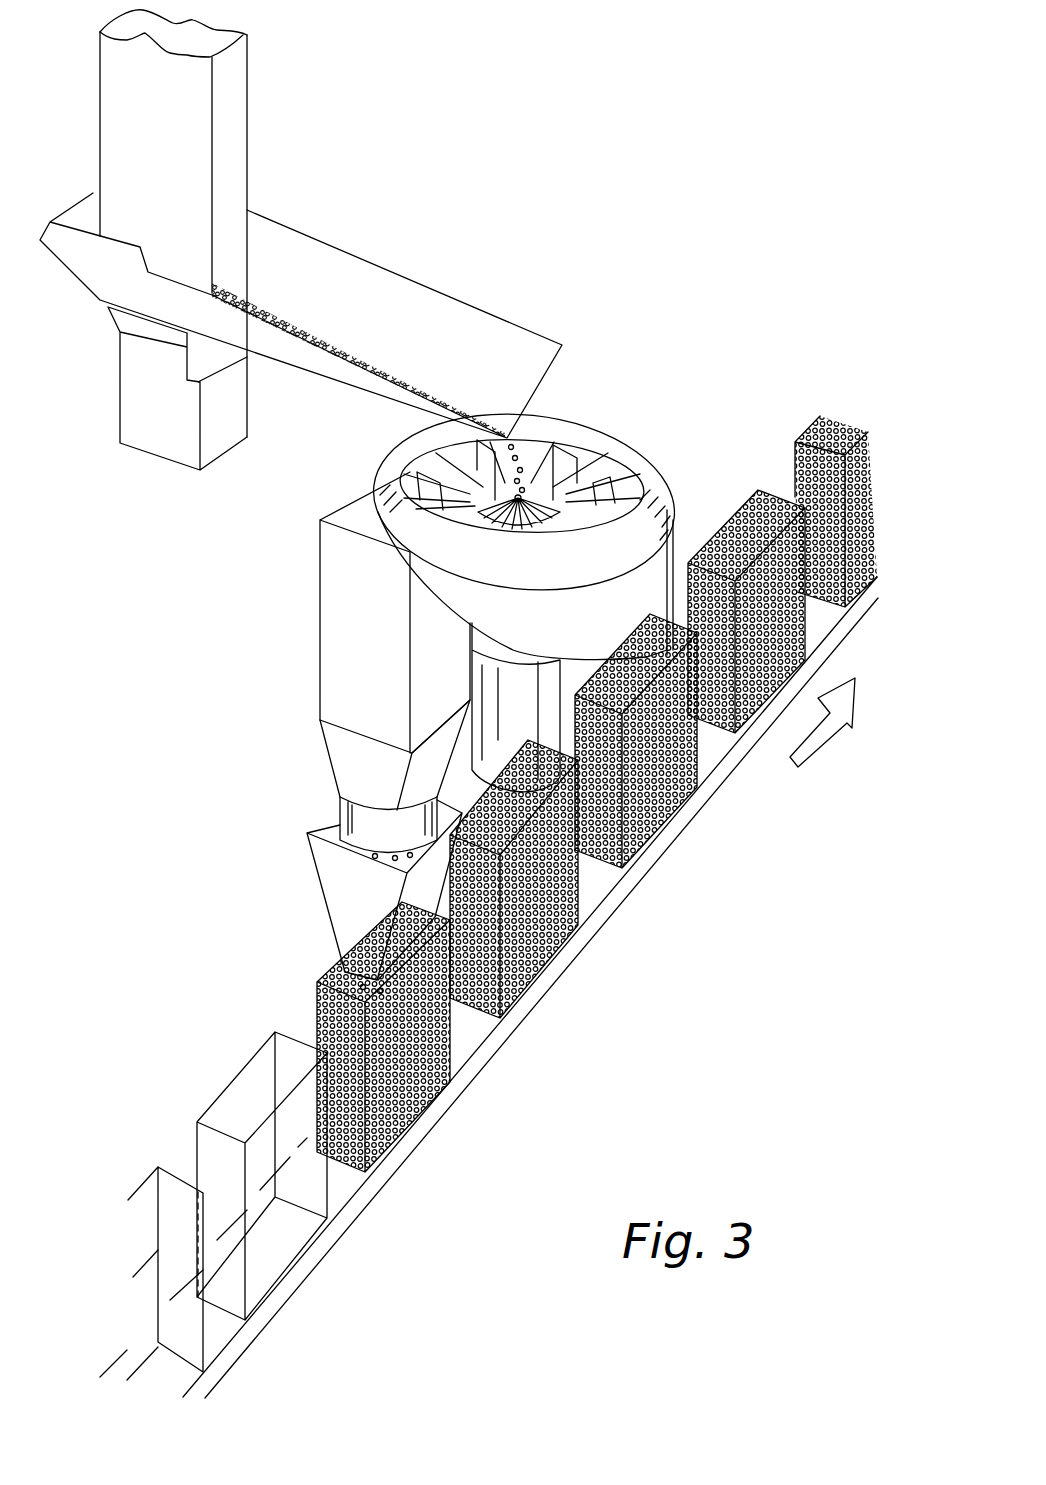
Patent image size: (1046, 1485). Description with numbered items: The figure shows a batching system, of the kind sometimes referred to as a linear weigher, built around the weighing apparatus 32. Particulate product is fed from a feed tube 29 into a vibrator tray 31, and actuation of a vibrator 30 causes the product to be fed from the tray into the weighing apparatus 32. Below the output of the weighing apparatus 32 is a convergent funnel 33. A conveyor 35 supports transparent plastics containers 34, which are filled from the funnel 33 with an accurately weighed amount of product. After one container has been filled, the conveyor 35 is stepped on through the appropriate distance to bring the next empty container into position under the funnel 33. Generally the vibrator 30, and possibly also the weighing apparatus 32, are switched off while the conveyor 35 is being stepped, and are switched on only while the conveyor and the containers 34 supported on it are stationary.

The feed tube 29 is at (233, 143).
The vibrator 30 is at (165, 437).
The vibrator tray 31 is at (352, 273).
The weighing apparatus 32 is at (340, 583).
The convergent funnel 33 is at (340, 903).
The transparent plastics containers 34 is at (293, 1237).
The conveyor 35 is at (557, 982).